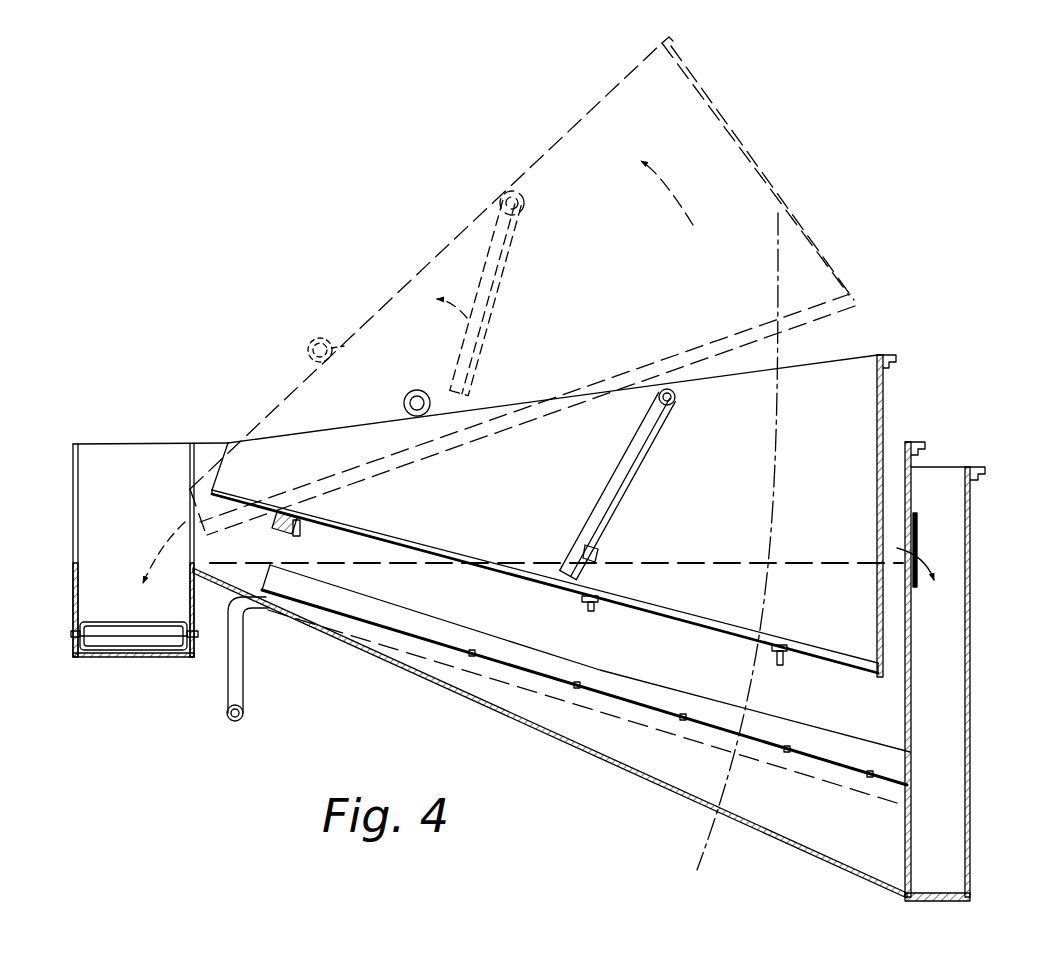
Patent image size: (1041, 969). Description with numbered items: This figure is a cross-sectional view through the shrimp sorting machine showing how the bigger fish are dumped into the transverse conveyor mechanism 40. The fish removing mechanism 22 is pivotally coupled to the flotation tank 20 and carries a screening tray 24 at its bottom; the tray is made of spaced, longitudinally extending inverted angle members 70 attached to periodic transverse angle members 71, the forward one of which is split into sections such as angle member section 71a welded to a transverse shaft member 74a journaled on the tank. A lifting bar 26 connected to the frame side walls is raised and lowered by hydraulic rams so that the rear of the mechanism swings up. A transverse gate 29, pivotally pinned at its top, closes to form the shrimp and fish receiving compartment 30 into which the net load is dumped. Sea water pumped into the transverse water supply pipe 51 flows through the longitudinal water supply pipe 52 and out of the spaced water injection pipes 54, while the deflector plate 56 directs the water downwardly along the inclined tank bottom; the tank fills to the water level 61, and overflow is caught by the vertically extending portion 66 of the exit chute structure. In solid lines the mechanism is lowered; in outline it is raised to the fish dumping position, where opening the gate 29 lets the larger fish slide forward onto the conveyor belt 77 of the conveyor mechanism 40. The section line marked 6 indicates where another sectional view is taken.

The flotation tank 20 is at (916, 630).
The fish removing mechanism 22 is at (889, 403).
The screening tray 24 is at (693, 607).
The lifting bar 26 is at (414, 391).
The transverse gate 29 is at (616, 468).
The shrimp and fish receiving compartment 30 is at (830, 452).
The transverse conveyor mechanism 40 is at (71, 577).
The transverse water supply pipe 51 is at (226, 714).
The longitudinal water supply pipe 52 is at (244, 690).
The water injection pipes 54 is at (578, 683).
The deflector plate 56 is at (655, 686).
The water level 61 is at (653, 562).
The vertically extending portion 66 is at (971, 518).
The inverted angle members 70 is at (786, 637).
The transverse angle members 71 is at (598, 611).
The angle member section 71a is at (295, 533).
The transverse shaft member 74a is at (279, 528).
The conveyor belt 77 is at (120, 626).
The section line 6- 6 is at (770, 285).